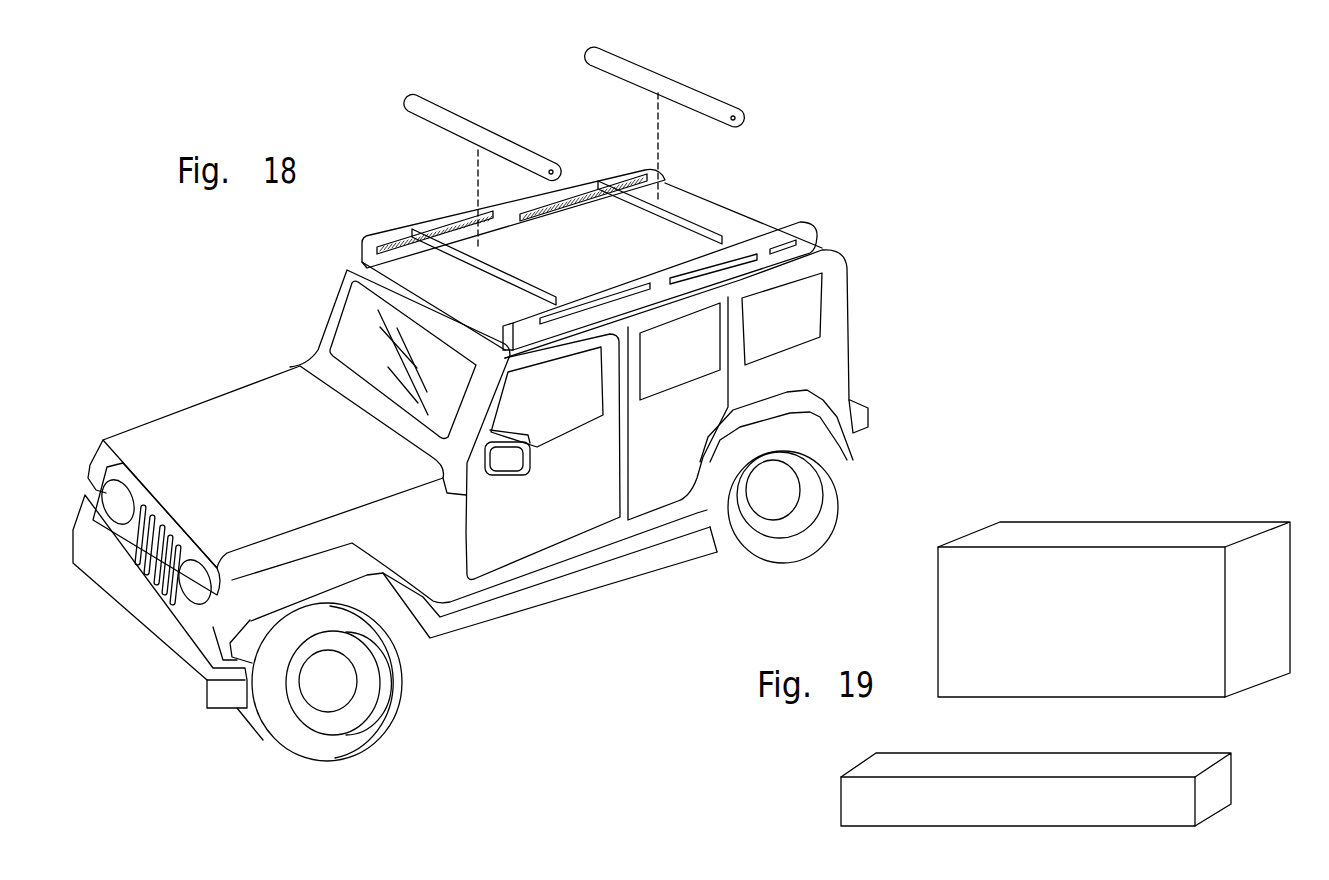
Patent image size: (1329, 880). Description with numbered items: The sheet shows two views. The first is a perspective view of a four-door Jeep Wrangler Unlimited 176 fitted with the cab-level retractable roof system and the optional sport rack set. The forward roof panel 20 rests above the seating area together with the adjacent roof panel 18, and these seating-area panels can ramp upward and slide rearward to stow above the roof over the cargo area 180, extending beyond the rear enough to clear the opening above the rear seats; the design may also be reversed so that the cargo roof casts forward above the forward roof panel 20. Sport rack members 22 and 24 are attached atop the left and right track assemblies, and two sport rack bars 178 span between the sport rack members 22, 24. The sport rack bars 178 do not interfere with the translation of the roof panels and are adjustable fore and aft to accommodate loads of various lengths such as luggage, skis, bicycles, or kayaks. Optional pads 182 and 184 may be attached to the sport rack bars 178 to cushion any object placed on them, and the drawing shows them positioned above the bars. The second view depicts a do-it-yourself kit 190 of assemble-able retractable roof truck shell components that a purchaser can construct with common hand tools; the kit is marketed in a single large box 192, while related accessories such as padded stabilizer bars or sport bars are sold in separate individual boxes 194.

In FIG. 18, the roof panel 18 is at (595, 253).
In FIG. 18, the forward roof panel 20 is at (471, 296).
In FIG. 18, the sport rack member 22 is at (787, 220).
In FIG. 18, the sport rack member 24 is at (476, 207).
In FIG. 18, the Jeep Wrangler Unlimited 176 is at (222, 432).
In FIG. 18, the sport rack bar 178 is at (440, 240).
In FIG. 18, the cargo area 180 is at (797, 310).
In FIG. 18, the pad 182 is at (487, 133).
In FIG. 18, the pad 184 is at (657, 80).
In FIG. 19, the do-it-yourself kit 190 is at (1015, 639).
In FIG. 19, the single large box 192 is at (1203, 533).
In FIG. 19, the separate individual boxes 194 is at (841, 795).